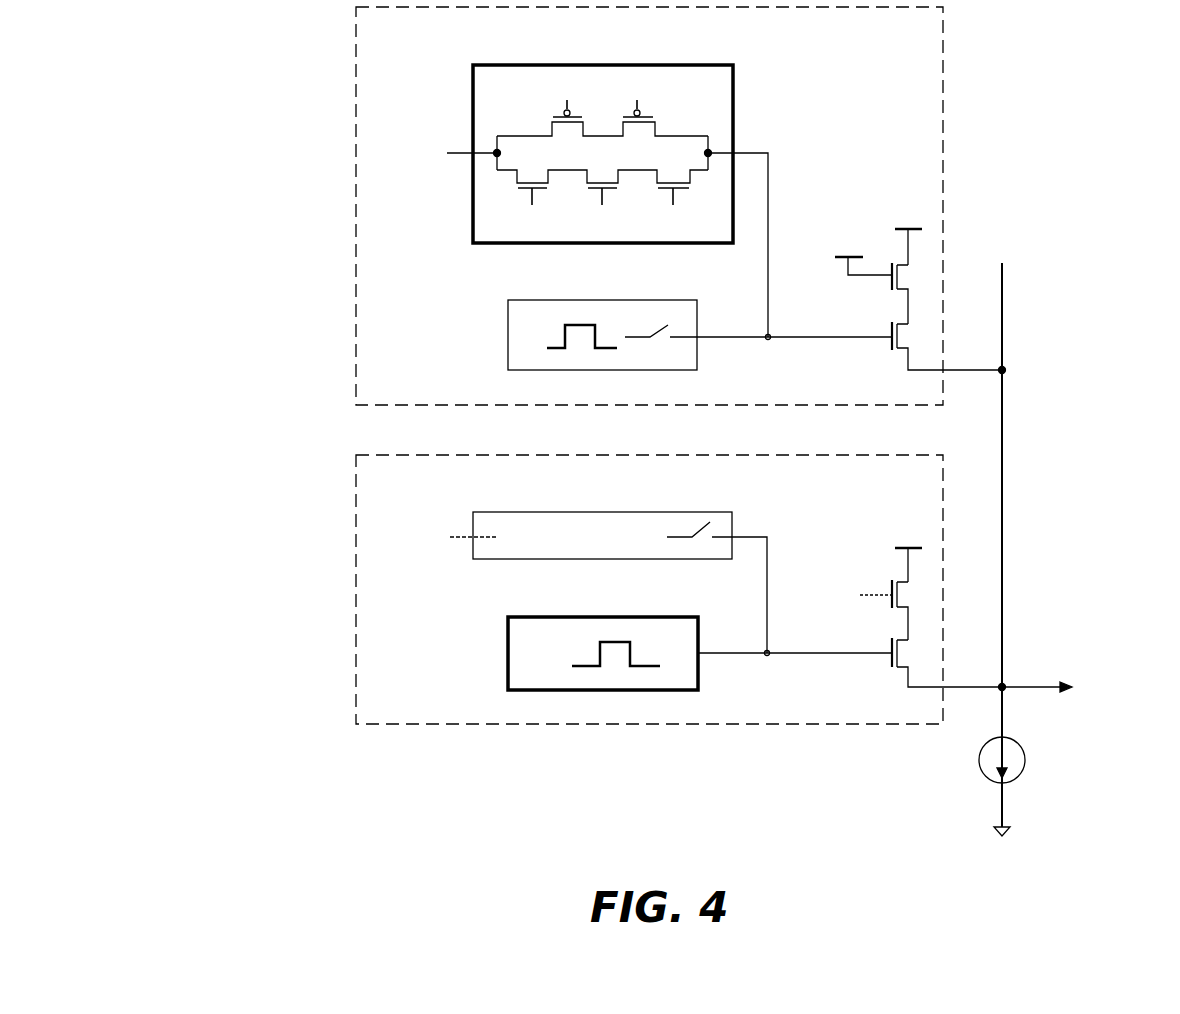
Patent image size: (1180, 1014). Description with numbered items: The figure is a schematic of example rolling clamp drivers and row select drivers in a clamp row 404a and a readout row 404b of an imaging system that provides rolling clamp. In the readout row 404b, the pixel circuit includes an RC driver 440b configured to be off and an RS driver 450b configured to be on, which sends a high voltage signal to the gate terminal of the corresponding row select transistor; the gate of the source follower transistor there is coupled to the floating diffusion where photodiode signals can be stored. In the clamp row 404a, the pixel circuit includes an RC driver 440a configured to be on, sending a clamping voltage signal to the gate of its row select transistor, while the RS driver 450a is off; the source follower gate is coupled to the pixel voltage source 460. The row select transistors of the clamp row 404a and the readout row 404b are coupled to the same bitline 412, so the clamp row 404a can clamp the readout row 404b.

The clamp row 404a is at (356, 260).
The readout row 404b is at (356, 637).
The RC driver 440a is at (473, 193).
The RC driver 440b is at (473, 555).
The RS driver 450a is at (508, 335).
The RS driver 450b is at (508, 653).
The voltage source PIXVDD 460 is at (849, 234).
The bitline 412 is at (1043, 241).